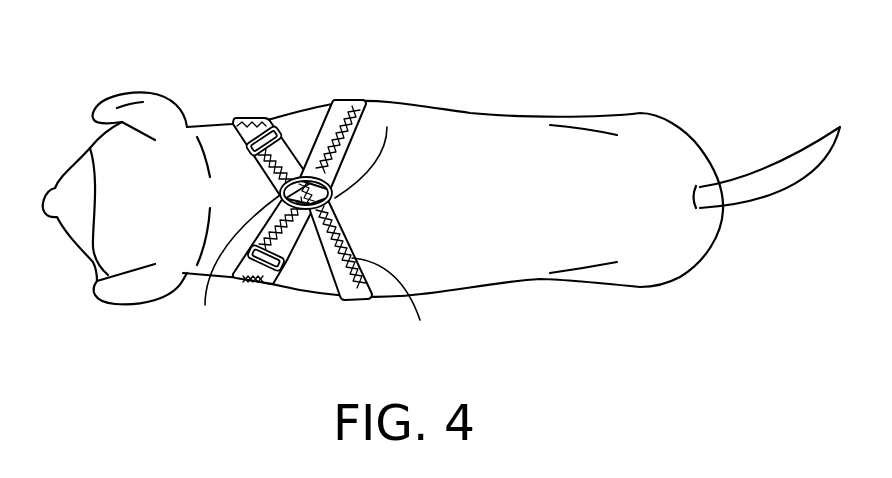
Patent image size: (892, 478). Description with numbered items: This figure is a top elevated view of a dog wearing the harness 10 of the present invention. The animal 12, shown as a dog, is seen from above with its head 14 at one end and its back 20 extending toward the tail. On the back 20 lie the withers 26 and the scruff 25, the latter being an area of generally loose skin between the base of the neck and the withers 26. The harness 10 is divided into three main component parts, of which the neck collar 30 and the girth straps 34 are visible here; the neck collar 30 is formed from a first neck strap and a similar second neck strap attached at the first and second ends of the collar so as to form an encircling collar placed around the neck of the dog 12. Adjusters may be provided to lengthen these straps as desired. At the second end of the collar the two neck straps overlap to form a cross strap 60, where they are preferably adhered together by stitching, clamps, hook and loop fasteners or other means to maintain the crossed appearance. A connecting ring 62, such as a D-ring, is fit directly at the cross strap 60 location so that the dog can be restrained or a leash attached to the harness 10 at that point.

The harness 10 is at (250, 120).
The animal 12 is at (143, 87).
The head 14 is at (130, 245).
The back 20 is at (442, 133).
The scruff 25 is at (254, 261).
The withers 26 is at (387, 127).
The neck collar 30 is at (291, 258).
The girth straps 34 is at (371, 270).
The cross strap 60 is at (308, 205).
The connecting ring 62 is at (310, 180).